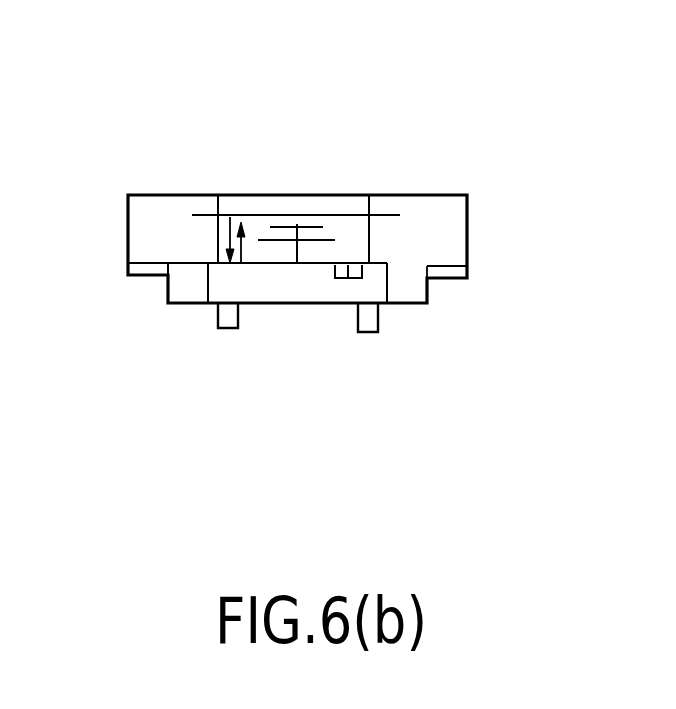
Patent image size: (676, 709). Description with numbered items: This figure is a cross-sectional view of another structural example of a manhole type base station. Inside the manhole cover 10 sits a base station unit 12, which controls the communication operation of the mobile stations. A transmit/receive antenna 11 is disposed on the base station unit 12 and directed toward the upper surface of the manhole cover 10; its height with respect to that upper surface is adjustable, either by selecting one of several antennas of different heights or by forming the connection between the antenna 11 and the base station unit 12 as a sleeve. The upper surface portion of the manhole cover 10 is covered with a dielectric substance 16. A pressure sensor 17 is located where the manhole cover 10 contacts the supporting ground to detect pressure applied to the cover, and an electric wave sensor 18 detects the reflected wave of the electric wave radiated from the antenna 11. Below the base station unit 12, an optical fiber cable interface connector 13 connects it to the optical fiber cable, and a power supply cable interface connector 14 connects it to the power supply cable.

The manhole cover 10 is at (468, 212).
The transmit/receive antenna 11 is at (307, 227).
The base station unit 12 is at (297, 303).
The optical fiber cable interface connector 13 is at (220, 328).
The power supply cable interface connector 14 is at (370, 333).
The dielectric substance 16 is at (282, 213).
The pressure sensor 17 is at (140, 277).
The electric wave sensor 18 is at (355, 272).